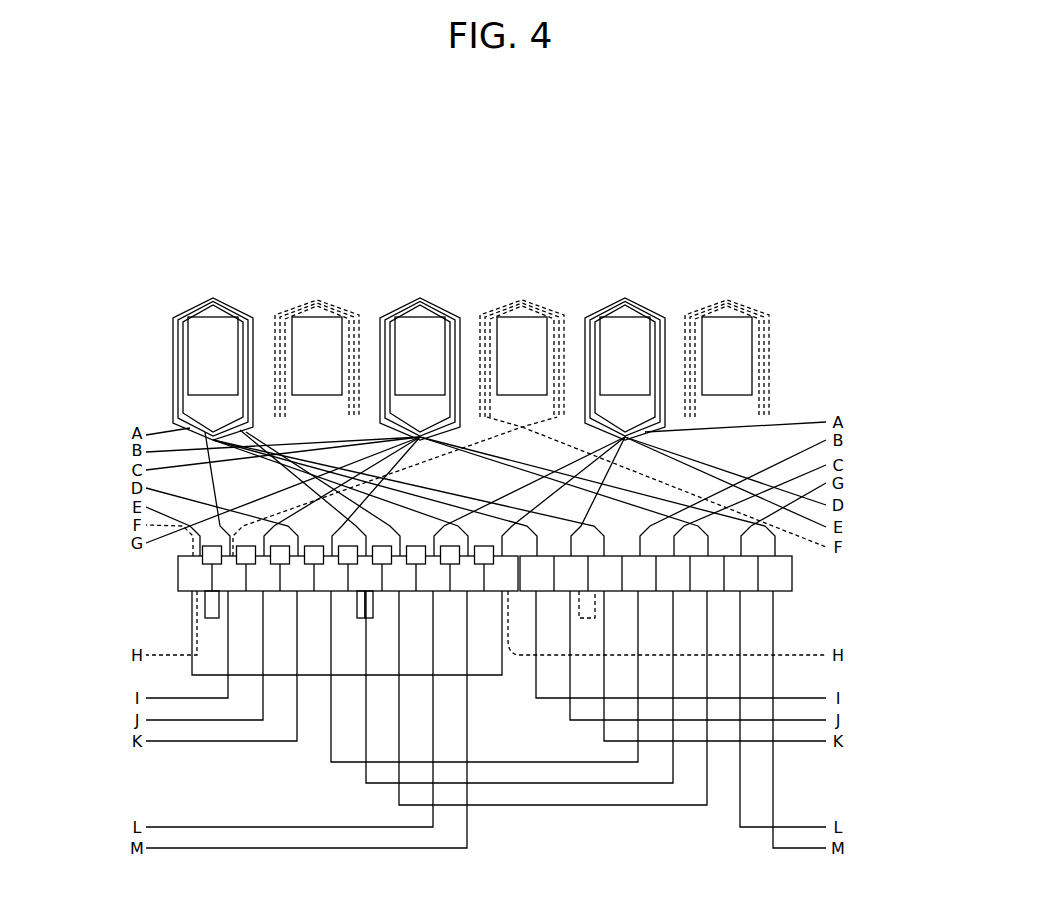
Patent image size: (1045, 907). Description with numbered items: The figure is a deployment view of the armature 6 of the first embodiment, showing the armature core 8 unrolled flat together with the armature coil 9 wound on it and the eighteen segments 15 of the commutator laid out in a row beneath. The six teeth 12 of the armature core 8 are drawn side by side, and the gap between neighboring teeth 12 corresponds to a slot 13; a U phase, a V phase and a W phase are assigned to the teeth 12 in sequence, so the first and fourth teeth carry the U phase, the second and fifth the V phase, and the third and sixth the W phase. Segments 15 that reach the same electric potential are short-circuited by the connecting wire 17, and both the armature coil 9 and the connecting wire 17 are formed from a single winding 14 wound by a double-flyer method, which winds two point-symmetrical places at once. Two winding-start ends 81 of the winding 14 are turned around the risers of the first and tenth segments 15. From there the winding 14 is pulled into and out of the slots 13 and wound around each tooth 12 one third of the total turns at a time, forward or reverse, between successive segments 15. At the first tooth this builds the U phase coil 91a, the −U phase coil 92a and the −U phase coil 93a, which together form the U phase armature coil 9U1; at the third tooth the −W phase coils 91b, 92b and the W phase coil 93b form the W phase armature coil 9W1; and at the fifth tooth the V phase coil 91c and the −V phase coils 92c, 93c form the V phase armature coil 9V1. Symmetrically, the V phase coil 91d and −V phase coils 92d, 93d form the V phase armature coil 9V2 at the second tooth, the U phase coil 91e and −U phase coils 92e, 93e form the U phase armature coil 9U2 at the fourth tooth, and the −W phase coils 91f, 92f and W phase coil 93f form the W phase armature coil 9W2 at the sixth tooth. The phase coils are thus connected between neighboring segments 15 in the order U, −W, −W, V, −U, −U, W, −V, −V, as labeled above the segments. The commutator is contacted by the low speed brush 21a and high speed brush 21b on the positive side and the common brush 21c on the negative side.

The armature 6 is at (843, 362).
The armature core 8 is at (772, 300).
The armature coil 9 is at (245, 280).
The tooth 12 is at (735, 333).
The slot 13 is at (265, 340).
The winding 14 is at (795, 428).
The segment 15 is at (795, 574).
The connecting wire 17 is at (581, 815).
The winding-start end 81 is at (190, 604).
The low speed brush 21a is at (208, 617).
The high speed brush 21b is at (588, 620).
The common brush 21c is at (362, 618).
The U phase armature coil 9U1 is at (118, 242).
The V phase armature coil 9V2 is at (255, 173).
The W phase armature coil 9W1 is at (465, 252).
The U phase armature coil 9U2 is at (447, 198).
The V phase armature coil 9V1 is at (698, 238).
The W phase armature coil 9W2 is at (812, 198).
The U phase coil 91a is at (205, 304).
The −U phase coil 92a is at (178, 316).
The −U phase coil 93a is at (173, 330).
The −W phase coil 91b is at (415, 304).
The −W phase coil 92b is at (388, 316).
The W phase coil 93b is at (382, 324).
The V phase coil 91c is at (633, 303).
The −V phase coil 92c is at (603, 308).
The −V phase coil 93c is at (588, 322).
The V phase coil 91d is at (310, 297).
The −V phase coil 92d is at (297, 307).
The −V phase coil 93d is at (285, 312).
The U phase coil 91e is at (515, 300).
The −U phase coil 92e is at (503, 307).
The −U phase coil 93e is at (490, 312).
The −W phase coil 91f is at (745, 300).
The −W phase coil 92f is at (738, 308).
The W phase coil 93f is at (715, 312).